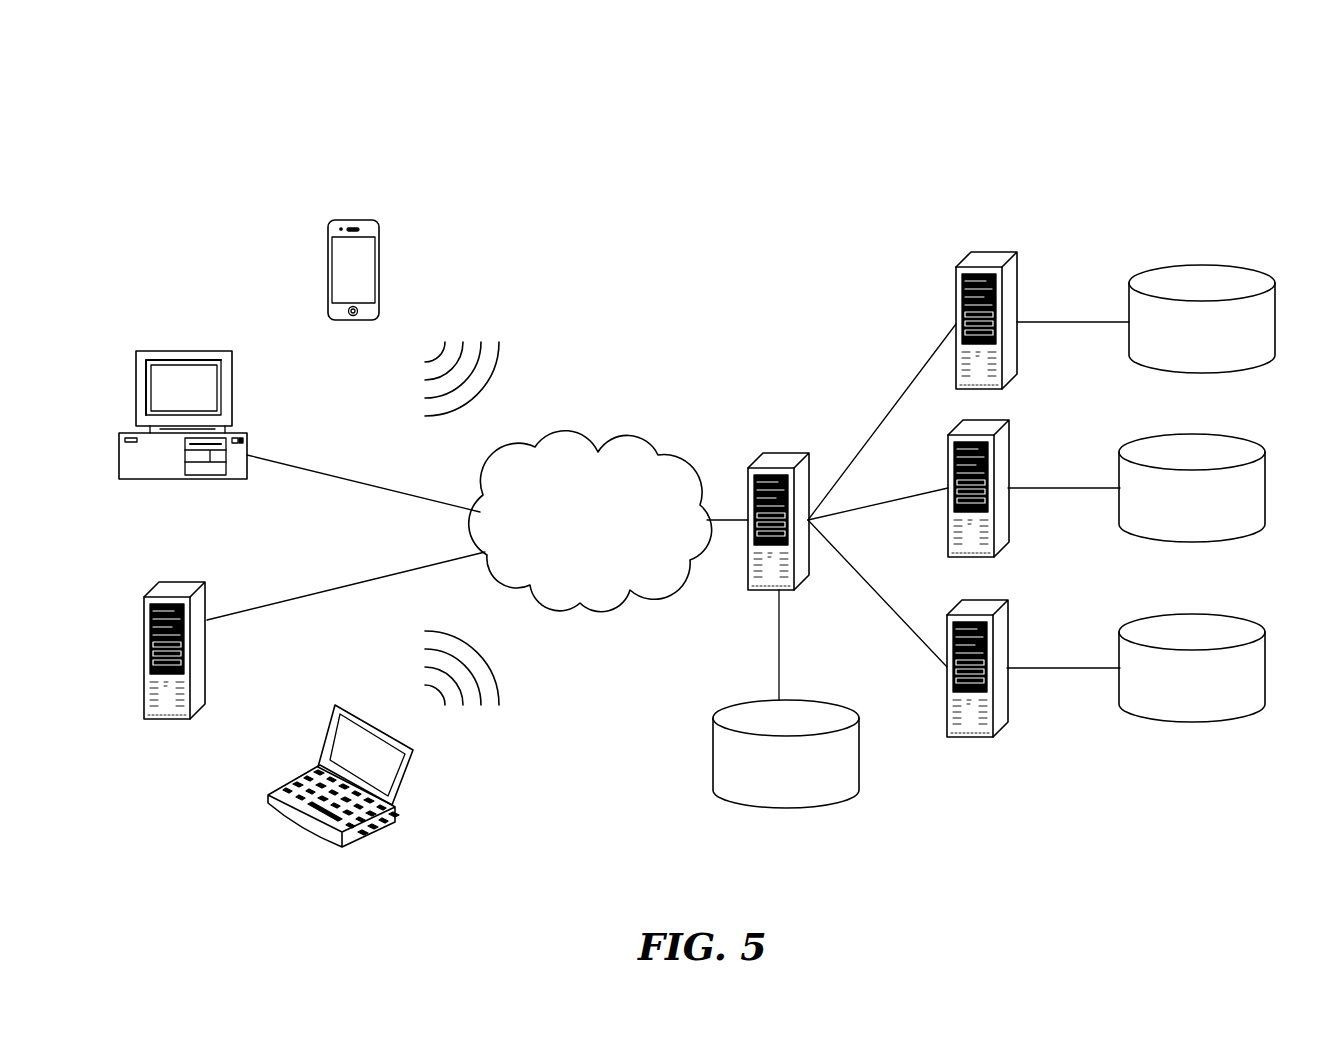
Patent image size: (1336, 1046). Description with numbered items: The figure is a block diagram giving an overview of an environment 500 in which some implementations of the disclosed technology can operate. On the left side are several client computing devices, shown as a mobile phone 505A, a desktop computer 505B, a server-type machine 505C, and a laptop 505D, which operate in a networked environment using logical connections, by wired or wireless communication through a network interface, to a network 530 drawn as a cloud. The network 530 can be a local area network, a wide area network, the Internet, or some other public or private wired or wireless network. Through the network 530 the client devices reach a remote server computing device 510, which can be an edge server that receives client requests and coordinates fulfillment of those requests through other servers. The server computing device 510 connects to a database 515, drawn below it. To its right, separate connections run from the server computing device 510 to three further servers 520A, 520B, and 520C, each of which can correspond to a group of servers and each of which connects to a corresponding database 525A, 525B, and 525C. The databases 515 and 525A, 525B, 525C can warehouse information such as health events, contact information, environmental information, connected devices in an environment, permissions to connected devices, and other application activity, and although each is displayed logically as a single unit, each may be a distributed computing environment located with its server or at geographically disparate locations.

The environment 500 is at (1076, 134).
The client computing device 505A is at (372, 220).
The client computing device 505B is at (226, 352).
The client computing device 505C is at (197, 582).
The client computing device 505D is at (413, 778).
The network 530 is at (647, 448).
The server computing device 510 is at (789, 456).
The database 515 is at (838, 705).
The server 520A is at (1016, 255).
The database 525A is at (1198, 265).
The server 520B is at (1008, 420).
The database 525B is at (1188, 432).
The server 520C is at (1007, 600).
The database 525C is at (1188, 612).